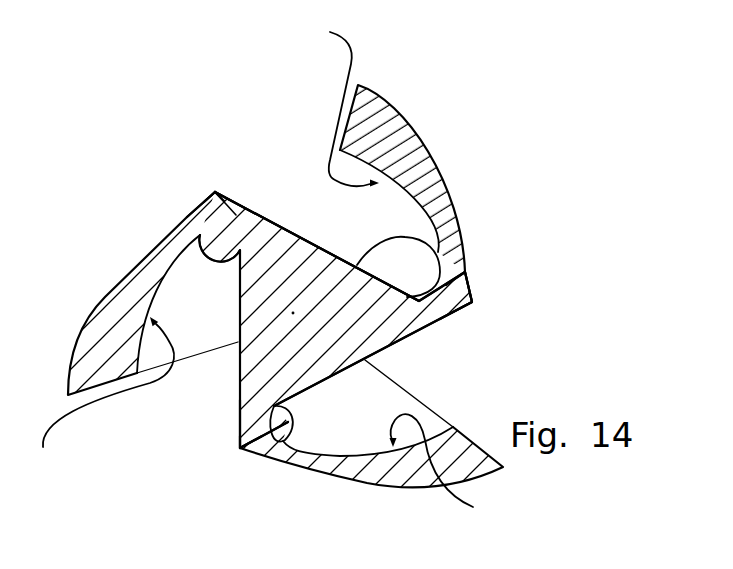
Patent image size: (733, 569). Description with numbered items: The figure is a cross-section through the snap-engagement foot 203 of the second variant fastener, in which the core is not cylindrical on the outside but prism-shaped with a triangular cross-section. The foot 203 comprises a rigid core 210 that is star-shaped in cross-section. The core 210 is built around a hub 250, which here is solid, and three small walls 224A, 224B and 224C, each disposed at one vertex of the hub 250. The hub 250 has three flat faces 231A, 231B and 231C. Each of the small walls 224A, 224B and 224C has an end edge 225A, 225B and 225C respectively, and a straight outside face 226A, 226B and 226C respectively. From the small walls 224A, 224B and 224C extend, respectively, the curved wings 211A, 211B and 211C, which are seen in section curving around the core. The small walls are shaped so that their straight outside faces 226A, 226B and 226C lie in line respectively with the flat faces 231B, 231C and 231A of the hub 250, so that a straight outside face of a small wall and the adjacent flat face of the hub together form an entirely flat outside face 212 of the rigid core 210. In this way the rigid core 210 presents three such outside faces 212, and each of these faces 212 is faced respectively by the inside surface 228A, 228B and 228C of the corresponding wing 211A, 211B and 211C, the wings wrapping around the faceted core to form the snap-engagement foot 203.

The snap-engagement foot 203 is at (612, 210).
The rigid core 210 is at (228, 398).
The curved wing 211A is at (132, 300).
The curved wing 211B is at (413, 147).
The curved wing 211C is at (384, 473).
The flat outside face 212 is at (318, 232).
The small wall 224A is at (214, 191).
The small wall 224B is at (470, 298).
The small wall 224C is at (240, 453).
The end edge 225A is at (195, 210).
The end edge 225B is at (470, 277).
The end edge 225C is at (244, 456).
The straight outside face 226A is at (238, 203).
The straight outside face 226B is at (458, 315).
The straight outside face 226C is at (238, 427).
The inside surface 228A is at (107, 396).
The inside surface 228B is at (325, 99).
The inside surface 228C is at (465, 472).
The flat face 231A is at (186, 238).
The flat face 231B is at (436, 240).
The flat face 231C is at (296, 410).
The hub 250 is at (295, 312).